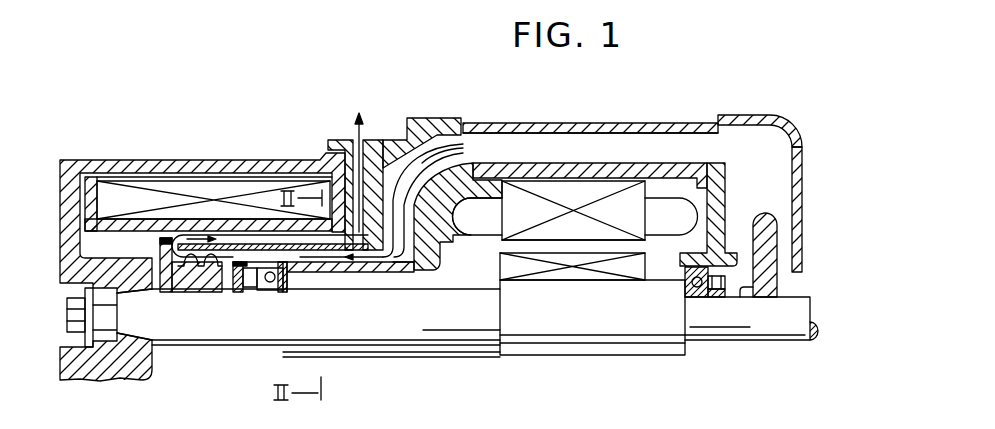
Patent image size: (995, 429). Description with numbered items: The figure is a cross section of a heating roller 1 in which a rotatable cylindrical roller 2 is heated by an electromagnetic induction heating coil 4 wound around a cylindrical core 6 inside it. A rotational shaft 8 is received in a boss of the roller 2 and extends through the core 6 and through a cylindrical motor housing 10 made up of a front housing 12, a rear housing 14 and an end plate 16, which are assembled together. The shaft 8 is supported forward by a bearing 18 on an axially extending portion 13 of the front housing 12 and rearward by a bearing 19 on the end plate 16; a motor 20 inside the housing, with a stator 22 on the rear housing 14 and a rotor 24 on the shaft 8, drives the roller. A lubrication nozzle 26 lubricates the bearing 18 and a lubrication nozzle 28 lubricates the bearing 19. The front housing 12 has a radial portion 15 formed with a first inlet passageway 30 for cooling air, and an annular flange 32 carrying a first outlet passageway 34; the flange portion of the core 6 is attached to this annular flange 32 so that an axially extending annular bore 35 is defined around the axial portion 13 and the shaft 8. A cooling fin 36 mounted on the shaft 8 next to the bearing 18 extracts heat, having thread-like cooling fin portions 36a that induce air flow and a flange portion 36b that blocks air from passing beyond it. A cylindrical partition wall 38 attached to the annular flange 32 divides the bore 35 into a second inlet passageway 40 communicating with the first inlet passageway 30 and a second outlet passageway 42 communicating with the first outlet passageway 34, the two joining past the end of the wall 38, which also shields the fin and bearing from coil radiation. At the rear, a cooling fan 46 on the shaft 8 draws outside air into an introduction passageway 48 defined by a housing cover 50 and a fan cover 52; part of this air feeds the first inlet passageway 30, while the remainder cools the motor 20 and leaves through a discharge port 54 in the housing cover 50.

The heating roller 1 is at (231, 158).
The cylindrical roller 2 is at (262, 166).
The electromagnetic induction heating coil 4 is at (198, 186).
The cylindrical core 6 is at (143, 220).
The rotational shaft 8 is at (185, 333).
The motor housing 10 is at (608, 164).
The front housing 12 is at (427, 272).
The axially extending portion 13 is at (393, 272).
The rear housing 14 is at (590, 163).
The radial portion 15 is at (437, 118).
The end plate 16 is at (725, 186).
The bearing 18 is at (267, 290).
The bearing 19 is at (690, 299).
The motor 20 is at (658, 199).
The stator 22 is at (517, 239).
The rotor 24 is at (505, 265).
The lubrication nozzle 26 is at (283, 332).
The lubrication nozzle 28 is at (717, 297).
The first inlet passageway 30 is at (505, 161).
The annular flange 32 is at (372, 140).
The first outlet passageway 34 is at (351, 140).
The axially extending annular bore 35 is at (306, 258).
The cooling fin 36 is at (163, 283).
The thread-like cooling fin portions 36a is at (245, 290).
The flange portion 36b is at (160, 243).
The cylindrical partition wall 38 is at (233, 246).
The second inlet passageway 40 is at (345, 272).
The second outlet passageway 42 is at (318, 240).
The cooling fan 46 is at (765, 297).
The introduction passageway 48 is at (553, 161).
The housing cover 50 is at (660, 123).
The fan cover 52 is at (793, 130).
The discharge port 54 is at (508, 123).